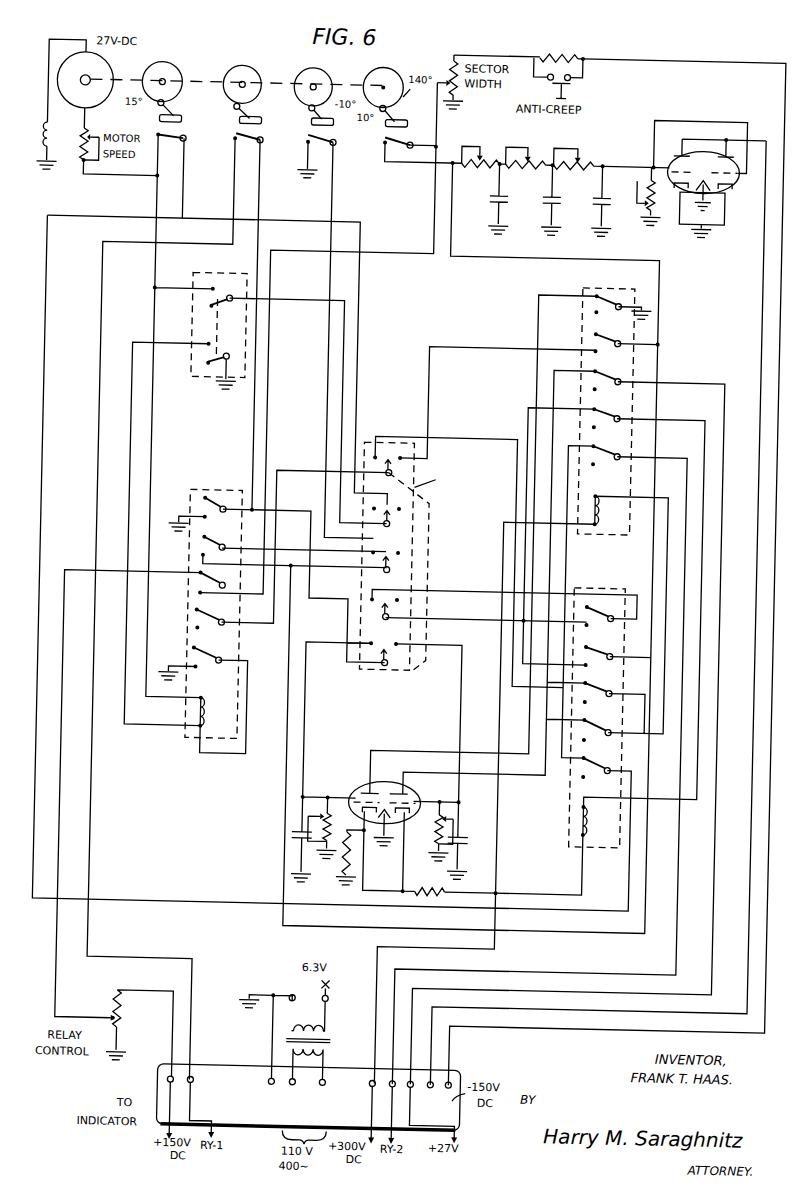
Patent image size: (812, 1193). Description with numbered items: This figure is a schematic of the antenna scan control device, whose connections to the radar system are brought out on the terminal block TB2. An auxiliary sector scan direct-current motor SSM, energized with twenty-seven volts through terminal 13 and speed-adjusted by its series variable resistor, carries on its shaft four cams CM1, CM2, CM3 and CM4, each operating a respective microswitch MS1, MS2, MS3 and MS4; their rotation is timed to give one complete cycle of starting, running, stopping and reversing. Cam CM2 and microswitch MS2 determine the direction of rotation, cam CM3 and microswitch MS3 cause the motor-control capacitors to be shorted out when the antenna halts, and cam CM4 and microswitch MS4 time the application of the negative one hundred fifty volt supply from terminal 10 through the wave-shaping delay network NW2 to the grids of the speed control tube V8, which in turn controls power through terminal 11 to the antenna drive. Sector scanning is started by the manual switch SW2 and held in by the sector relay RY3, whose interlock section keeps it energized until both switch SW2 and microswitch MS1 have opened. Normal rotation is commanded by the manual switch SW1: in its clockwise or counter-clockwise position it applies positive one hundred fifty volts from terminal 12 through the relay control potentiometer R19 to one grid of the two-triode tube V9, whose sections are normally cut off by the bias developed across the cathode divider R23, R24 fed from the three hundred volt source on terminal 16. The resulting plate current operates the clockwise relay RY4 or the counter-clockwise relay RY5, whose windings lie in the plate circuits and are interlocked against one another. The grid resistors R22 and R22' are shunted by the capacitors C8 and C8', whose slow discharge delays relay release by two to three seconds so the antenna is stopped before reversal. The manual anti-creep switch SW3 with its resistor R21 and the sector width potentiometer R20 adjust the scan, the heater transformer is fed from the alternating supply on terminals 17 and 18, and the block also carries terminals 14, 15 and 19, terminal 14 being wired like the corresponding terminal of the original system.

The sector scan D.-C. motor SSM is at (99, 79).
The cam CM1 is at (165, 71).
The cam CM2 is at (236, 70).
The cam CM3 is at (306, 70).
The cam CM4 is at (370, 74).
The microswitch MS1 is at (157, 128).
The microswitch MS2 is at (234, 132).
The microswitch MS3 is at (308, 134).
The microswitch MS4 is at (384, 137).
The sector scan width potentiometer R20 is at (444, 81).
The resistor R21 is at (559, 46).
The anti-creep switch SW3 is at (568, 79).
The wave shaping-timing network NW2 is at (560, 148).
The control vacuum tube V8 is at (722, 187).
The manual multi-contact switch SW2 is at (210, 323).
The multi-contact control relay RY3 is at (204, 612).
The manual multi-contact switch SW1 is at (405, 552).
The clockwise relay RY4 is at (614, 402).
The counter-clockwise relay RY5 is at (597, 709).
The control vacuum tube V9 is at (366, 783).
The grid resistor R22 is at (322, 814).
The grid resistor R22' is at (440, 817).
The capacitor C8 is at (284, 847).
The capacitor C8' is at (466, 848).
The voltage divider resistance R23 is at (348, 875).
The voltage divider resistance R24 is at (430, 882).
The relay control potentiometer R19 is at (131, 1020).
The terminal block TB2 is at (166, 1082).
The terminal 10 is at (460, 1087).
The terminal 11 is at (443, 1087).
The terminal 12 is at (184, 1087).
The terminal 13 is at (432, 1112).
The terminal 14 is at (204, 1087).
The terminal 15 is at (404, 1087).
The terminal 16 is at (380, 1087).
The terminal 17 is at (336, 1087).
The terminal 18 is at (300, 1087).
The terminal 19 is at (279, 1086).